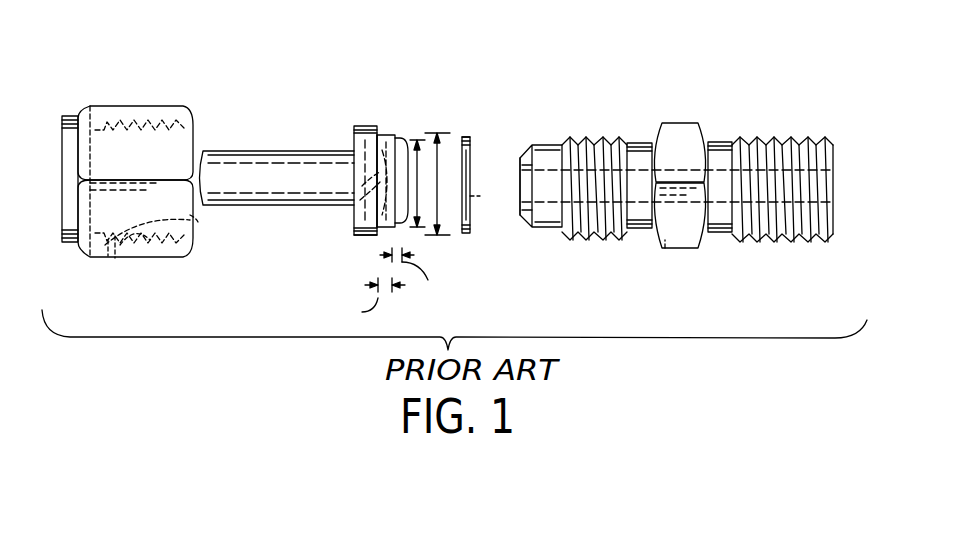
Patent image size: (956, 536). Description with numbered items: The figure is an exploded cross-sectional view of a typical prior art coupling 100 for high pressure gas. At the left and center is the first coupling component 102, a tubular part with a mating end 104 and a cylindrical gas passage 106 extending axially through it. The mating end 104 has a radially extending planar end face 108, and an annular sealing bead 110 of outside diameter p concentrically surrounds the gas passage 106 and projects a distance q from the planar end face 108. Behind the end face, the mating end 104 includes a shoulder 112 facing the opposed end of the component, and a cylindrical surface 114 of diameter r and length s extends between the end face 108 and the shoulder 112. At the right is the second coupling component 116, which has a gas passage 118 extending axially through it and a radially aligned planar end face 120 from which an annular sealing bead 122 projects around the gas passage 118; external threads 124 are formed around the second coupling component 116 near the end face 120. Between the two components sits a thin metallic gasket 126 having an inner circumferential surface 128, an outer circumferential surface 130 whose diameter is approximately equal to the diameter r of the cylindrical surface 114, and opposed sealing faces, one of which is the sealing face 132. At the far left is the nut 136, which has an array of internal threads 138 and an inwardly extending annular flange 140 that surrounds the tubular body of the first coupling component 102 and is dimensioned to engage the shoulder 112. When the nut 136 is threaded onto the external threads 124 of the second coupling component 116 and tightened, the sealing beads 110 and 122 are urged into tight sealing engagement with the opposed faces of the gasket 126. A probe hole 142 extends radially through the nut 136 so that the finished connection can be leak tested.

The prior art coupling 100 is at (310, 103).
The first coupling component 102 is at (276, 143).
The mating end 104 is at (365, 125).
The cylindrical gas passage 106 is at (355, 182).
The planar end face 108 is at (393, 137).
The annular sealing bead 110 is at (410, 148).
The shoulder 112 is at (362, 237).
The cylindrical surface 114 is at (376, 235).
The second coupling component 116 is at (700, 118).
The gas passage 118 is at (697, 193).
The planar end face 120 is at (565, 228).
The annular sealing bead 122 is at (582, 137).
The external threads 124 is at (630, 142).
The metallic gasket 126 is at (480, 115).
The inner circumferential surface 128 is at (482, 198).
The outer circumferential surface 130 is at (470, 134).
The sealing face 132 is at (520, 155).
The nut 136 is at (115, 106).
The internal threads 138 is at (193, 220).
The annular flange 140 is at (135, 240).
The probe hole 142 is at (115, 255).